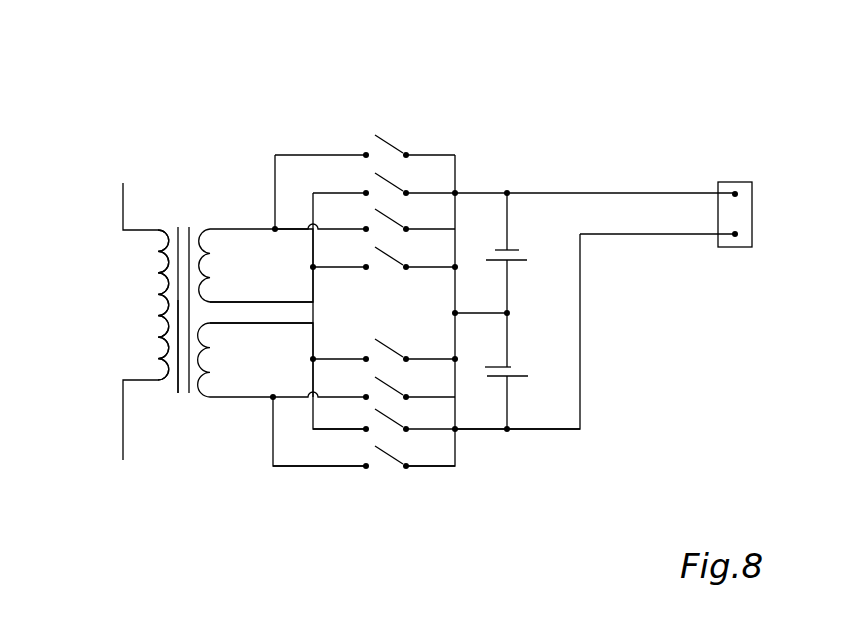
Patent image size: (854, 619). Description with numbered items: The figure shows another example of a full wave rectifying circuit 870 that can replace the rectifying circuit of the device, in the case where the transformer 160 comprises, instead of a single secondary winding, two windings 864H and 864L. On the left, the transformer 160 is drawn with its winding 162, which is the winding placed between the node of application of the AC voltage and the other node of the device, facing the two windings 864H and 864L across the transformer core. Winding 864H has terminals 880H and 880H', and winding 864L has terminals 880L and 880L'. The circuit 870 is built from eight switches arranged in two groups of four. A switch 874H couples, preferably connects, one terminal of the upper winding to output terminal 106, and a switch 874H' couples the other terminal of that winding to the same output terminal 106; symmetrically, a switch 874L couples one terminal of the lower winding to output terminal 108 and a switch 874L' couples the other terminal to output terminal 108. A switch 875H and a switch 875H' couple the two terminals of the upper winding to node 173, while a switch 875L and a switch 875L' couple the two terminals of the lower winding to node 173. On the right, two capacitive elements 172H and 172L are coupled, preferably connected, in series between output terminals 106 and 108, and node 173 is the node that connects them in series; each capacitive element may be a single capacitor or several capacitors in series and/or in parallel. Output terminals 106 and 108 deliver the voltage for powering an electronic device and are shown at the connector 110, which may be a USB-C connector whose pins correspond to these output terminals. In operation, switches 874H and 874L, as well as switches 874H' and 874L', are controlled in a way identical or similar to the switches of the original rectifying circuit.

The full wave rectifying circuit 870 is at (176, 73).
The transformer 160 is at (113, 365).
The winding 162 is at (150, 278).
The winding 864H is at (208, 249).
The winding 864L is at (200, 385).
The terminal 880H is at (240, 228).
The terminal 880H' is at (261, 265).
The terminal 880L is at (246, 410).
The terminal 880L' is at (288, 360).
The switch 874H is at (384, 113).
The switch 874H' is at (447, 154).
The switch 875H is at (341, 174).
The switch 875H' is at (384, 278).
The switch 875L' is at (426, 403).
The switch 875L is at (350, 445).
The switch 874L' is at (446, 479).
The switch 874L is at (364, 501).
The capacitive element 172H is at (522, 265).
The node 173 is at (514, 312).
The capacitive element 172L is at (522, 380).
The connector 110 is at (738, 250).
The output terminal 106 is at (752, 194).
The output terminal 108 is at (752, 234).